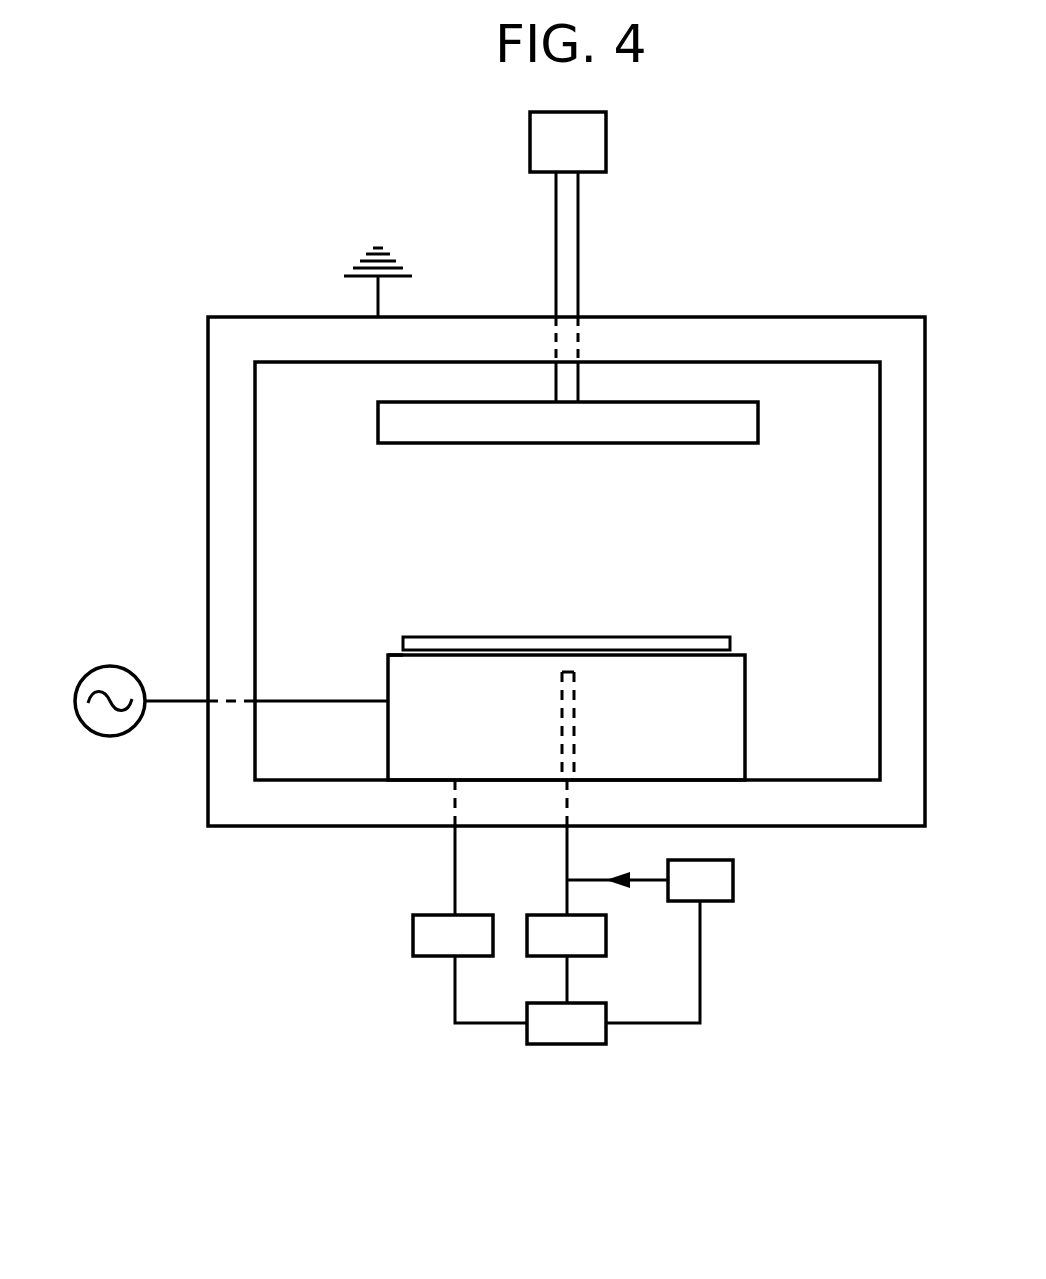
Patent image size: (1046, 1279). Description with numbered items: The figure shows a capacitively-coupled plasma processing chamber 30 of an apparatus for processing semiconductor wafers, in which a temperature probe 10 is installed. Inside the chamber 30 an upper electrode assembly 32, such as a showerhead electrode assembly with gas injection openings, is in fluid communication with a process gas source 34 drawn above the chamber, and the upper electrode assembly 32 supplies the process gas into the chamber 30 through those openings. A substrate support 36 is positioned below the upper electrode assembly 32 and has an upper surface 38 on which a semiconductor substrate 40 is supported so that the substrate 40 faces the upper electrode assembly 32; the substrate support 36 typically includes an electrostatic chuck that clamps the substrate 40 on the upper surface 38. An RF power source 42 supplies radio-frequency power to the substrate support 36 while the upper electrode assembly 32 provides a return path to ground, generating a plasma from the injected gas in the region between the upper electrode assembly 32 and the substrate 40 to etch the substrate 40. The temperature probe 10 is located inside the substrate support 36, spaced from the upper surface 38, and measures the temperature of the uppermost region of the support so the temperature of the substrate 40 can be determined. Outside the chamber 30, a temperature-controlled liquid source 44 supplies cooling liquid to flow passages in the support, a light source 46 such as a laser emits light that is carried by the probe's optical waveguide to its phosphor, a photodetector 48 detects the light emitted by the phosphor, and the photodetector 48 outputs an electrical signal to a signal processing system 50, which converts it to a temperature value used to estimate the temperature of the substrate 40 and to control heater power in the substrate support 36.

The plasma processing chamber 30 is at (826, 281).
The process gas source 34 is at (606, 140).
The upper electrode assembly 32 is at (758, 421).
The semiconductor substrate 40 is at (732, 642).
The substrate support 36 is at (745, 712).
The upper surface 38 is at (393, 652).
The temperature probe 10 is at (576, 727).
The RF power source 42 is at (110, 736).
The temperature-controlled liquid source 44 is at (413, 934).
The photodetector 48 is at (606, 935).
The light source 46 is at (733, 880).
The signal processing system 50 is at (548, 1046).